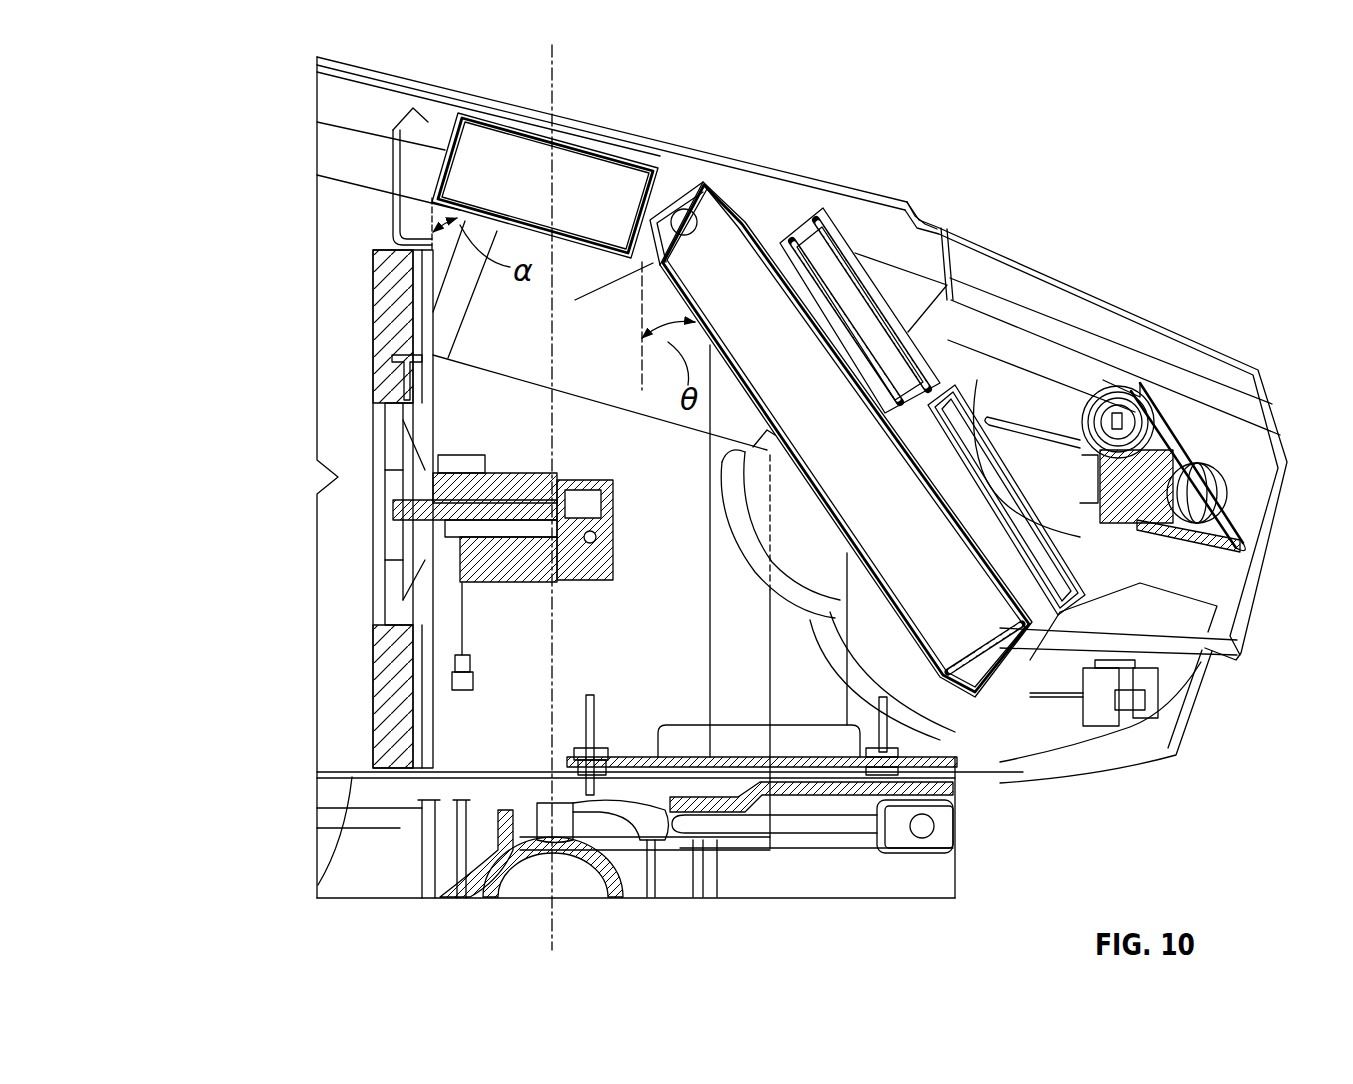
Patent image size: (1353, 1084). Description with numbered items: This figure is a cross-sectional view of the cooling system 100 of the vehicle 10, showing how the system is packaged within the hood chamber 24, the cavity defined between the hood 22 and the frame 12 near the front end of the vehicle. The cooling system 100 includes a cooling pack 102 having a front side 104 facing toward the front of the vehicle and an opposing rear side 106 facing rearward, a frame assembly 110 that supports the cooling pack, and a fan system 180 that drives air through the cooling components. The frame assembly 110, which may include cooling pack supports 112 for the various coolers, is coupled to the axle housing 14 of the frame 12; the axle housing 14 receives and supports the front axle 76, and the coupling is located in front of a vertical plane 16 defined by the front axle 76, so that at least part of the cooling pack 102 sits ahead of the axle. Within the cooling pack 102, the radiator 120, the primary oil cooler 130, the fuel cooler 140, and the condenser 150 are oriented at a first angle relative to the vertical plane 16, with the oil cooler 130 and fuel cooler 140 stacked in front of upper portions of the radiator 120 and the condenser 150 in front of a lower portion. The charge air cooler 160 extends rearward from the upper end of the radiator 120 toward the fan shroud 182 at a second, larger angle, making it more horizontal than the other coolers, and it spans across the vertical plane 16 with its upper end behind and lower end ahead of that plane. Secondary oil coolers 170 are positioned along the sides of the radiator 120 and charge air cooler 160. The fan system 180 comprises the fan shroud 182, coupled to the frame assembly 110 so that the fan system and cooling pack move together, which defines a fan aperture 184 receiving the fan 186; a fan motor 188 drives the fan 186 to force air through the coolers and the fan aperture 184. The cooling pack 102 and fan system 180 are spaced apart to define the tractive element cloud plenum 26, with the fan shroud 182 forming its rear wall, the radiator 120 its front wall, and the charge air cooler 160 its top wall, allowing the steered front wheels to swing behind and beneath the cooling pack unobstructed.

The vehicle 10 is at (188, 95).
The frame 12 is at (943, 879).
The axle housing 14 is at (797, 885).
The vertical plane 16 is at (557, 84).
The hood 22 is at (991, 283).
The hood chamber 24 is at (1060, 370).
The tractive element cloud plenum 26 is at (582, 647).
The front axle 76 is at (582, 885).
The cooling system 100 is at (827, 481).
The cooling pack 102 is at (803, 183).
The front side 104 is at (998, 281).
The rear side 106 is at (803, 513).
The frame assembly 110 is at (688, 710).
The cooling pack supports 112 is at (706, 470).
The radiator 120 is at (760, 205).
The primary oil cooler 130 is at (860, 280).
The fuel cooler 140 is at (858, 245).
The condenser 150 is at (998, 395).
The charge air cooler 160 is at (513, 137).
The secondary oil coolers 170 is at (573, 297).
The fan system 180 is at (411, 438).
The fan shroud 182 is at (387, 157).
The fan aperture 184 is at (373, 292).
The fan 186 is at (378, 365).
The fan motor 188 is at (500, 470).